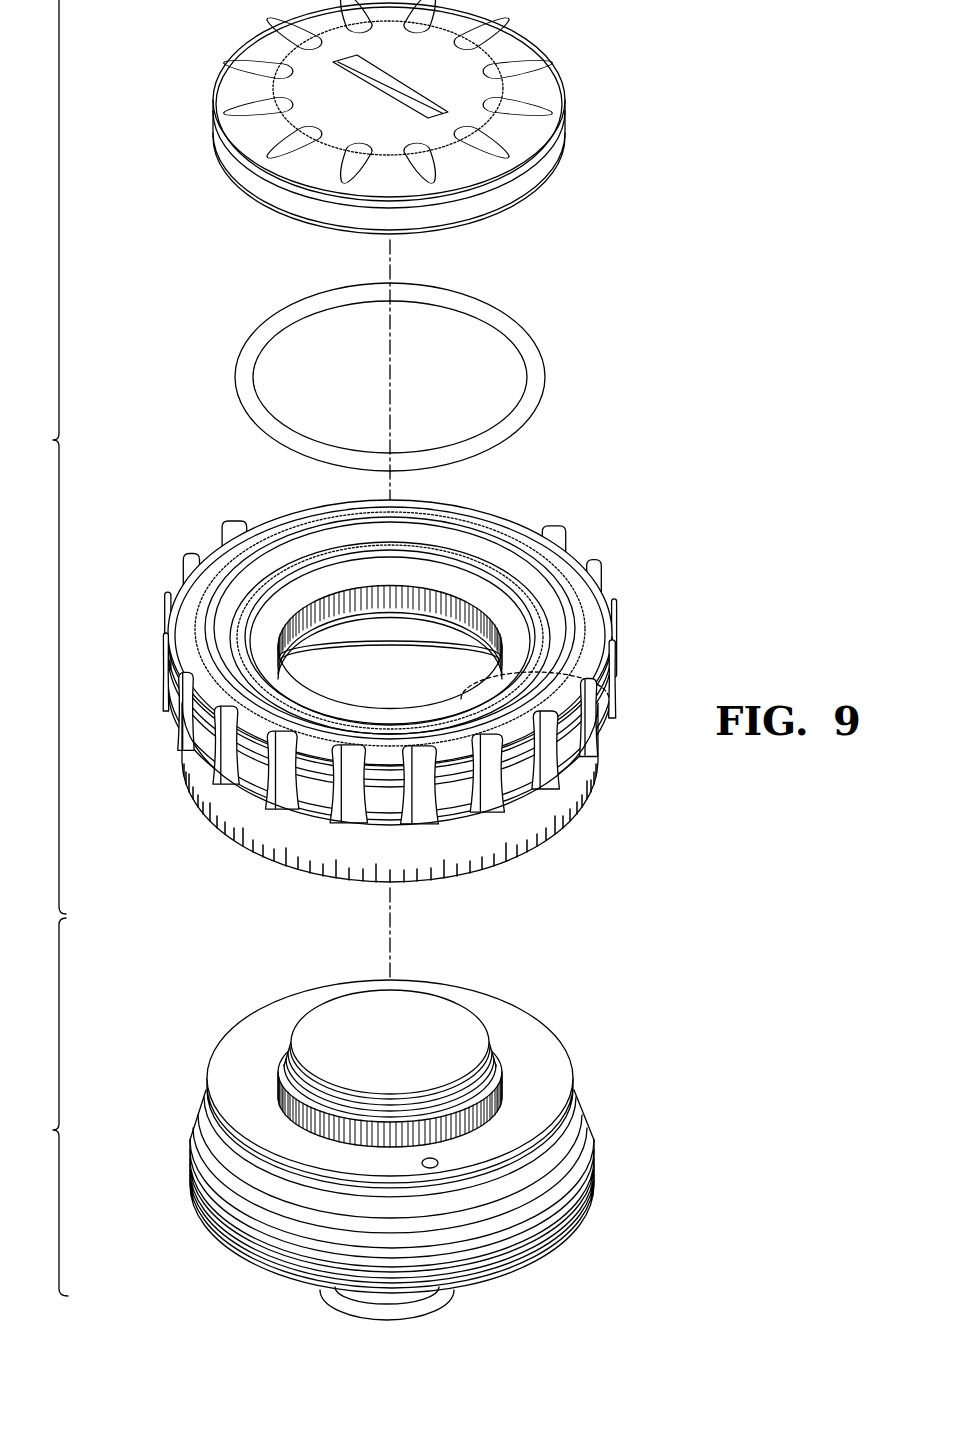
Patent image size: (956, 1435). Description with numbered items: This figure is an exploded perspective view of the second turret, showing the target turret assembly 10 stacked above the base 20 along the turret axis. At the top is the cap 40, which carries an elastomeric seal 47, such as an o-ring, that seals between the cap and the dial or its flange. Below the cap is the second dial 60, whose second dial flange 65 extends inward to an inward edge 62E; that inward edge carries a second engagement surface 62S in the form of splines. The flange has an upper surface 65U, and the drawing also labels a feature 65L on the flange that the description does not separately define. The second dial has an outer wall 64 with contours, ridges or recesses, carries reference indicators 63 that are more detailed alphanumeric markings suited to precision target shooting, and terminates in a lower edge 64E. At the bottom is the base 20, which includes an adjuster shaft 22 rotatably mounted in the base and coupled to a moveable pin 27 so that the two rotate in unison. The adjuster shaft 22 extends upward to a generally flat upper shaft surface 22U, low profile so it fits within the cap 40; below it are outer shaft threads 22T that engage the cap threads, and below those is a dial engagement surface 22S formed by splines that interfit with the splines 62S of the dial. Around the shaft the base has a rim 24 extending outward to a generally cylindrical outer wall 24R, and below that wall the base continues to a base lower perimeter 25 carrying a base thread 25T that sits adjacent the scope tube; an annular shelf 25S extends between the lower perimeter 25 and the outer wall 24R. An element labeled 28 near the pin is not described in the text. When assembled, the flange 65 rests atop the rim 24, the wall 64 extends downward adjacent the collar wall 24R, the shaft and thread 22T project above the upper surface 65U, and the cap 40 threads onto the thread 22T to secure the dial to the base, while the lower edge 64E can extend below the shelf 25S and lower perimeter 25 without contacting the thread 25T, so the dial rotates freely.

The target turret assembly 10 is at (53, 440).
The base 20 is at (53, 1130).
The cap 40 is at (557, 63).
The seal 47 is at (525, 340).
The second dial 60 is at (146, 668).
The second engagement surface 62S is at (457, 595).
The inward edge 62E is at (482, 607).
The reference indicators 63 is at (186, 813).
The outer wall 64 is at (172, 749).
The lower edge 64E is at (228, 833).
The second dial flange 65 is at (528, 617).
The upper surface 65U is at (537, 657).
The lower step of ring top surface 65L is at (605, 673).
The adjuster shaft 22 is at (427, 1000).
The upper shaft surface 22U is at (450, 1025).
The outer shaft threads 22T is at (484, 1075).
The dial engagement surface 22S is at (500, 1100).
The rim 24 is at (238, 1046).
The outer wall 24R is at (203, 1115).
The base lower perimeter 25 is at (200, 1183).
The shelf 25S is at (200, 1140).
The base thread 25T is at (205, 1222).
The moveable pin 27 is at (392, 1302).
The foot recess 28 is at (340, 1300).